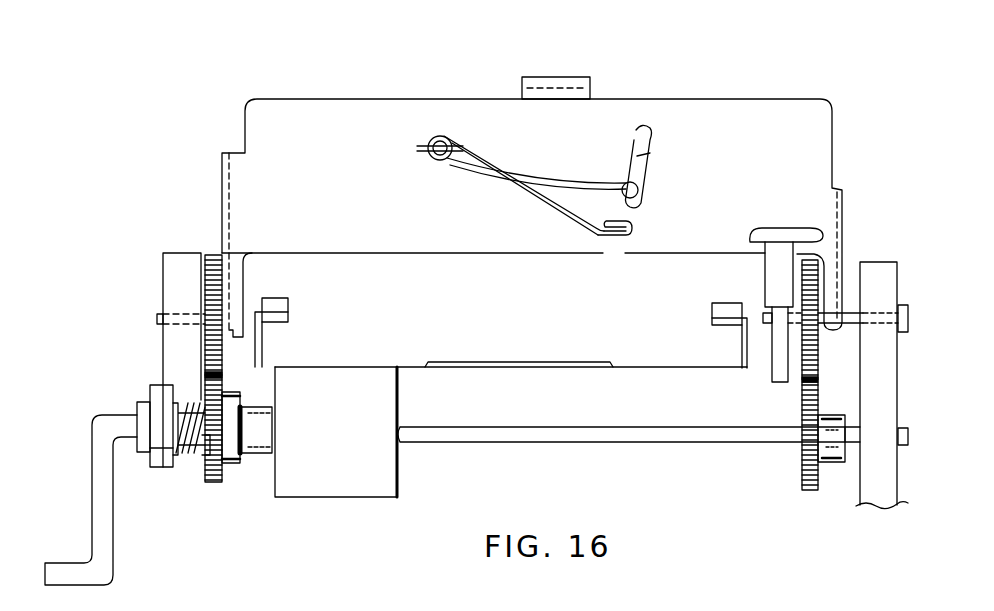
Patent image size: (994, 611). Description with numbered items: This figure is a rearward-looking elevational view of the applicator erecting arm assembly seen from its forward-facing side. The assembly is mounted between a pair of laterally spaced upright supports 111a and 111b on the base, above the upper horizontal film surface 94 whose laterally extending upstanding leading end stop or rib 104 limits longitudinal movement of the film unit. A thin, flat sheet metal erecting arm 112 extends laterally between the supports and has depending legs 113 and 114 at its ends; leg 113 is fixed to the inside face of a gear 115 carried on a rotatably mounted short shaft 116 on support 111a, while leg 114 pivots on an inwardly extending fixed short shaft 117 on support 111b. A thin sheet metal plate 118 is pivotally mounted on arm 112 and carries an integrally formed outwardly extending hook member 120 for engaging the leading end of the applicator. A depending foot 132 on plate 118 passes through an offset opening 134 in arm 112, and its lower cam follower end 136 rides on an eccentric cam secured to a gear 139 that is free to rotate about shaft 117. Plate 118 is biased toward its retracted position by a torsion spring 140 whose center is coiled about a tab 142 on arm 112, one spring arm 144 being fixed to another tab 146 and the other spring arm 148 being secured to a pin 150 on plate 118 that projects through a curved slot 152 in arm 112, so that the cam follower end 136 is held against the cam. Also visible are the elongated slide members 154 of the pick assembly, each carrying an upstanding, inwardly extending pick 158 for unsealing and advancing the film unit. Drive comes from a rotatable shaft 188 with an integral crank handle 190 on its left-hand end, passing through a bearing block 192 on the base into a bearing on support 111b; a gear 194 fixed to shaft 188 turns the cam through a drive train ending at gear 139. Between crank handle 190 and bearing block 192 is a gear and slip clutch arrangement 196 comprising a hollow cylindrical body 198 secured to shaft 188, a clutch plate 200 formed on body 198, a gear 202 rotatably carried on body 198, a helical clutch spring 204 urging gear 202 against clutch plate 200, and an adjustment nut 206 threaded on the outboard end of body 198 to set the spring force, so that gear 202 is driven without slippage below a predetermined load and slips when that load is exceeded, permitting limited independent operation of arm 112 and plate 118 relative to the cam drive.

The upper horizontal film surface 94 is at (658, 368).
The leading end stop or rib 104 is at (557, 362).
The upright support 111a is at (172, 266).
The upright support 111b is at (896, 377).
The erecting arm 112 is at (712, 113).
The depending leg 113 is at (236, 272).
The depending leg 114 is at (842, 246).
The gear 115 is at (212, 254).
The short shaft 116 is at (157, 319).
The fixed short shaft 117 is at (850, 328).
The sheet metal plate 118 is at (660, 165).
The hook member 120 is at (556, 77).
The depending foot 132 is at (765, 301).
The offset opening 134 is at (750, 236).
The cam follower end 136 is at (768, 307).
The gear 139 is at (816, 358).
The torsion spring 140 is at (533, 174).
The tab 142 is at (418, 146).
The spring arm 144 is at (544, 203).
The tab 146 is at (610, 218).
The spring arm 148 is at (562, 183).
The pin 150 is at (639, 196).
The curved slot 152 is at (645, 140).
The slide member 154 is at (262, 345).
The pick 158 is at (322, 290).
The rotatable shaft 188 is at (631, 442).
The crank handle 190 is at (108, 515).
The bearing block 192 is at (401, 482).
The gear 194 is at (802, 464).
The gear and slip clutch arrangement 196 is at (192, 498).
The hollow cylindrical body or tube 198 is at (258, 445).
The clutch plate 200 is at (222, 417).
The gear 202 is at (212, 483).
The helical clutch spring 204 is at (197, 407).
The adjustment nut 206 is at (155, 392).